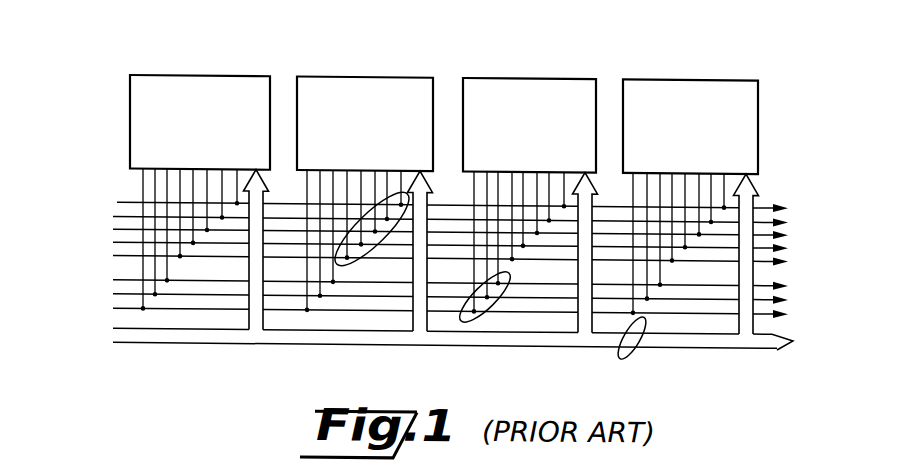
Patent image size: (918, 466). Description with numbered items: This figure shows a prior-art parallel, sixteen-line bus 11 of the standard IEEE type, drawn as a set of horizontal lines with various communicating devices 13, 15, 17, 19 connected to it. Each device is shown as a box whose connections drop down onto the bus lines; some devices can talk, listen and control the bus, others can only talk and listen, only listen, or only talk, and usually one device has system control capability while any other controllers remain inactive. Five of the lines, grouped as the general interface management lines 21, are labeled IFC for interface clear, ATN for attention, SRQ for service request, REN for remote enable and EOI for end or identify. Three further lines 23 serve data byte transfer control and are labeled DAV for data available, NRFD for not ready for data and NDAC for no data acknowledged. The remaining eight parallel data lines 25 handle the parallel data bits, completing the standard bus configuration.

The parallel 16-line bus 11 is at (805, 186).
The communicating device 13 is at (228, 74).
The communicating device 15 is at (358, 74).
The communicating device 17 is at (530, 76).
The communicating device 19 is at (680, 75).
The general interface management lines 21 is at (359, 260).
The data byte transfer control lines 23 is at (483, 315).
The parallel data lines 25 is at (633, 348).